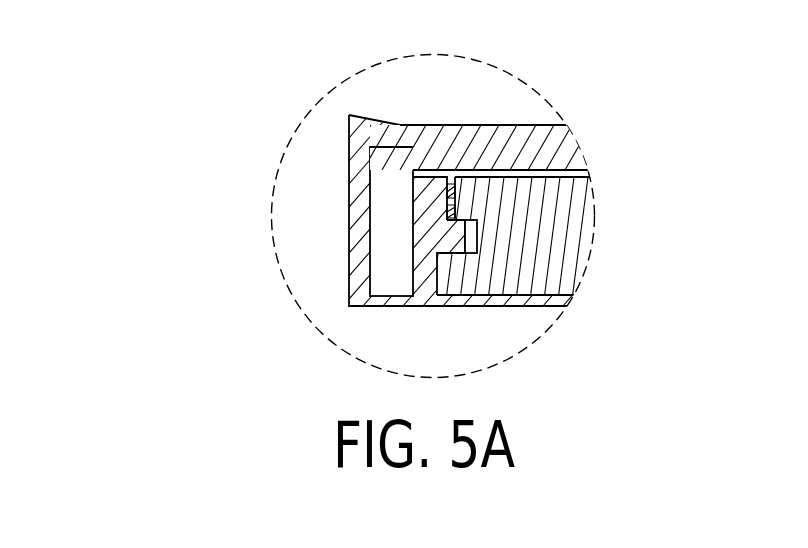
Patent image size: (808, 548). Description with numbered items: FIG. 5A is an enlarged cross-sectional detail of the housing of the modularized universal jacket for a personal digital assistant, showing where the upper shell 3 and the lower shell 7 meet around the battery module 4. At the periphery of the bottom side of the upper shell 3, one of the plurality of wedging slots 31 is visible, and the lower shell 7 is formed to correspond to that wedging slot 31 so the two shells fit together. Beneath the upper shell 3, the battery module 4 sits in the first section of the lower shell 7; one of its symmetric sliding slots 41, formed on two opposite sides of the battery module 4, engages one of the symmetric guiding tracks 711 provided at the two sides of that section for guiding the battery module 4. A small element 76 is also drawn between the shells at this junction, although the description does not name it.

The upper shell 3 is at (560, 126).
The wedging slot 31 is at (450, 193).
The battery module 4 is at (577, 198).
The sliding slot 41 is at (471, 237).
The lower shell 7 is at (349, 262).
The guiding track 711 is at (466, 257).
The seal ring 76 is at (448, 203).